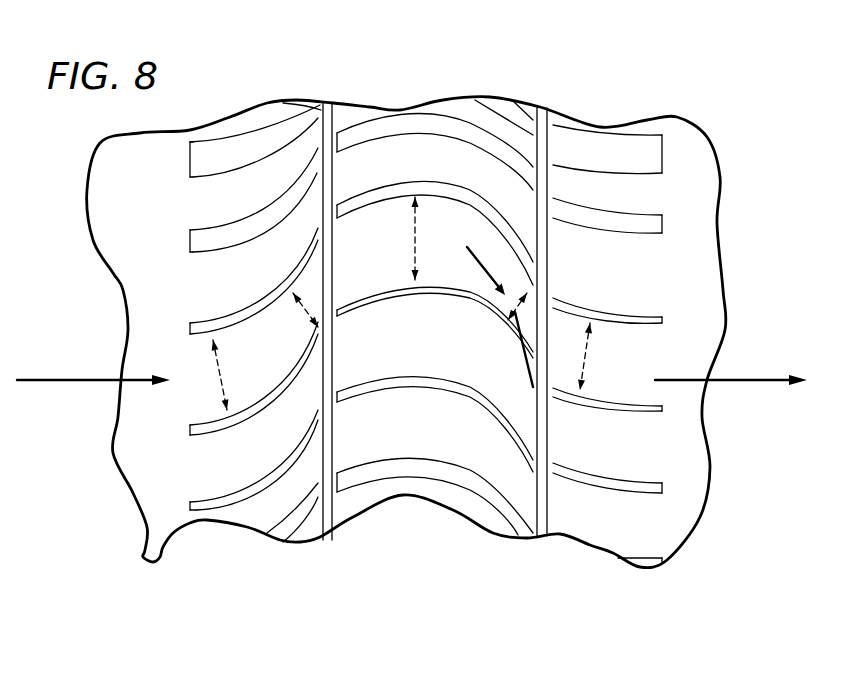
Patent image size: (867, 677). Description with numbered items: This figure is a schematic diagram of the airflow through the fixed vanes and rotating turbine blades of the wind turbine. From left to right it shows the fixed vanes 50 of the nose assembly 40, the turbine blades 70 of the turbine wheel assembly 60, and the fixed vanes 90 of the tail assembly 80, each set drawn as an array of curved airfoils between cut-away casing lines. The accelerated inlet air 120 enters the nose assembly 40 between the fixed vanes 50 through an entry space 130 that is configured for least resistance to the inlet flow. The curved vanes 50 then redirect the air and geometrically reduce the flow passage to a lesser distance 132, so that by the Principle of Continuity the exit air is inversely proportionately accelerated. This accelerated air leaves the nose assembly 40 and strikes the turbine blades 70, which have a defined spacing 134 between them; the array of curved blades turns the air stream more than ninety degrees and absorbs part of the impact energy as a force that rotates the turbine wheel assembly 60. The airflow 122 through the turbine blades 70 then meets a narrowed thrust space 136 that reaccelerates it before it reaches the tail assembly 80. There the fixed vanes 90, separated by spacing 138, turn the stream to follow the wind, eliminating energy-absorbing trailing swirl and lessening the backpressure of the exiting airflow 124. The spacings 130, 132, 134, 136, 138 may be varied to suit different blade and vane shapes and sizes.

The nose assembly 40 is at (185, 371).
The fixed vanes 50 is at (224, 320).
The turbine wheel assembly 60 is at (447, 279).
The turbine blades 70 is at (402, 180).
The tail assembly 80 is at (652, 386).
The fixed vanes 90 is at (619, 314).
The accelerated inlet air 120 is at (72, 378).
The airflow through the turbine blades 122 is at (477, 263).
The exiting airflow 124 is at (747, 378).
The entry space 130 is at (213, 377).
The lesser distance 132 is at (302, 310).
The defined spacing 134 is at (420, 233).
The narrowed thrust space 136 is at (517, 308).
The spacing 138 is at (590, 362).